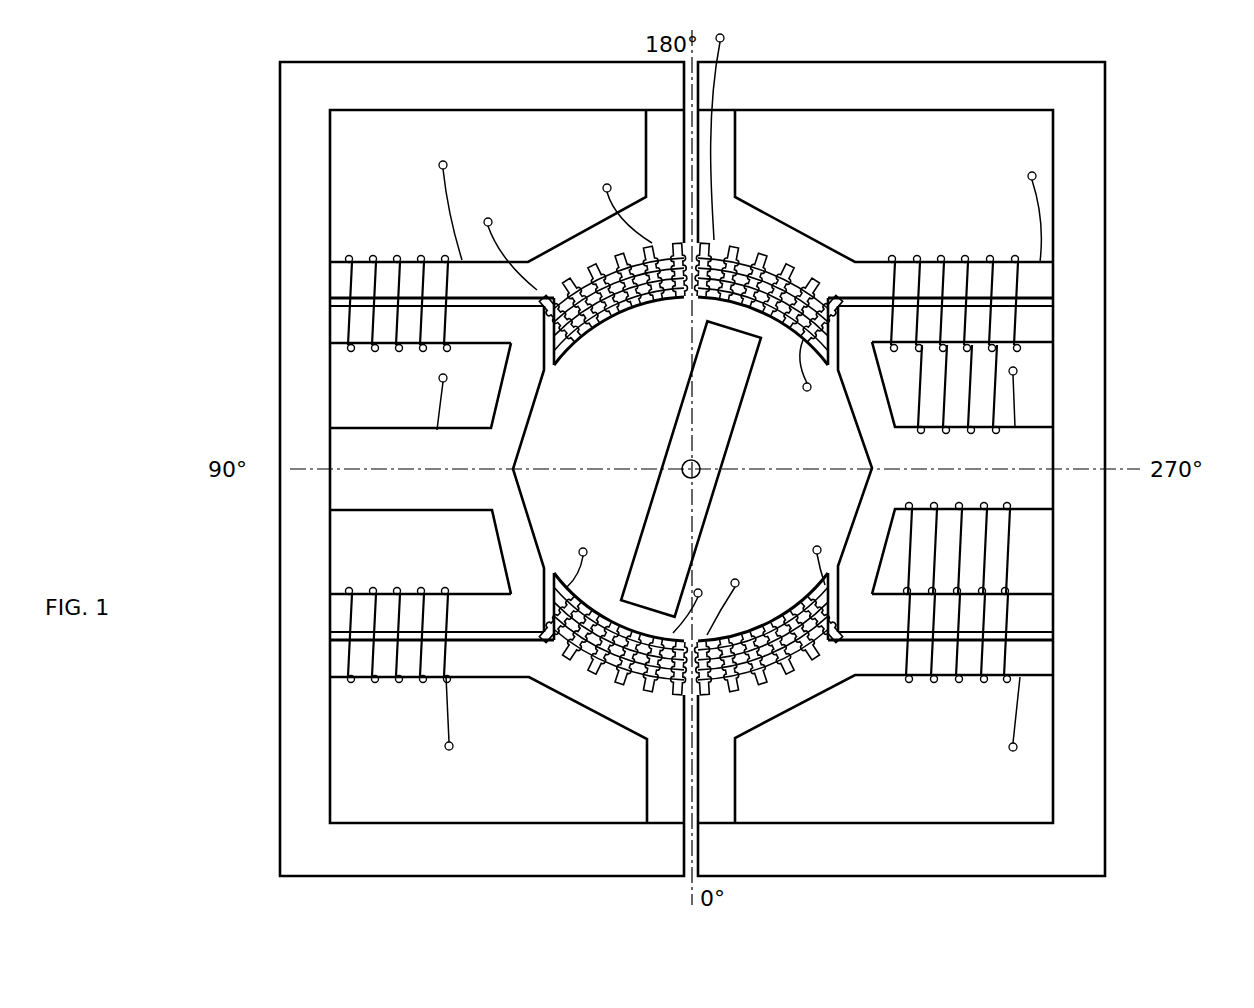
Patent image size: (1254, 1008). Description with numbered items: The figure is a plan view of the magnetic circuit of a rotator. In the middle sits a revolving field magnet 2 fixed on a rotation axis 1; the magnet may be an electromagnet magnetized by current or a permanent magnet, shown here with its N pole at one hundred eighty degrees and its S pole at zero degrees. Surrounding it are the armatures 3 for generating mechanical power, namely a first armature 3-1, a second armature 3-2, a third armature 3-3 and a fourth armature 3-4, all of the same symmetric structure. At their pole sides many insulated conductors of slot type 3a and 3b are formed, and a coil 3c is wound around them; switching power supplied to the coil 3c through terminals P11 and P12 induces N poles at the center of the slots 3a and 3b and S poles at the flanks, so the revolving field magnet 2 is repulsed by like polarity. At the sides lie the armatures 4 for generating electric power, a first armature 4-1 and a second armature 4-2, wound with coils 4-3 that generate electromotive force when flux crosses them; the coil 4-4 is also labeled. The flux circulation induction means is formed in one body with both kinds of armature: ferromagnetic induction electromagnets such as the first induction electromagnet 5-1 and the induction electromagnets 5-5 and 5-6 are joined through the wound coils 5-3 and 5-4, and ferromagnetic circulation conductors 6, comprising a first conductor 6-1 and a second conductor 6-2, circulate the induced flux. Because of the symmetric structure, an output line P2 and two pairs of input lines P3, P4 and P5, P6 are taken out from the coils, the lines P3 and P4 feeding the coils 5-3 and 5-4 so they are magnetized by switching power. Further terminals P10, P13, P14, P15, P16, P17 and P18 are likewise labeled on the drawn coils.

The rotation axis 1 is at (700, 476).
The revolving field magnet 2 is at (732, 398).
The armatures for generating the mechanical power 3 is at (776, 208).
The conductor of slot type 3a is at (663, 306).
The conductor of slot type 3b is at (733, 300).
The coil 3c is at (738, 248).
The first armature 3-1 is at (823, 255).
The second armature 3-2 is at (782, 700).
The third armature 3-3 is at (588, 686).
The fourth armature 3-4 is at (575, 252).
The armatures for generating the electric power 4 is at (1035, 408).
The first armature for generating the electric power 4-1 is at (1038, 458).
The second armature for generating the electric power 4-2 is at (338, 494).
The coil for generating the electric power 4-3 is at (1002, 511).
The side pole 4-4 is at (393, 502).
The first induction electromagnet 5-1 is at (1048, 335).
The coil 5-3 is at (970, 257).
The coil 5-4 is at (952, 657).
The induction electromagnet 5-5 is at (338, 664).
The induction electromagnet 5-6 is at (338, 330).
The circulation conductors 6 is at (1127, 650).
The first conductor 6-1 is at (1093, 730).
The second conductor 6-2 is at (300, 779).
The output line P2 is at (459, 396).
The input line P3 is at (1015, 728).
The input line P4 is at (1031, 202).
The input line P5 is at (446, 728).
The input line P6 is at (445, 196).
The terminal P10 is at (1001, 393).
The terminal P11 is at (743, 136).
The terminal P12 is at (817, 378).
The terminal P13 is at (744, 602).
The terminal P14 is at (820, 552).
The terminal P15 is at (589, 553).
The terminal P16 is at (705, 598).
The terminal P17 is at (506, 239).
The terminal P18 is at (624, 198).